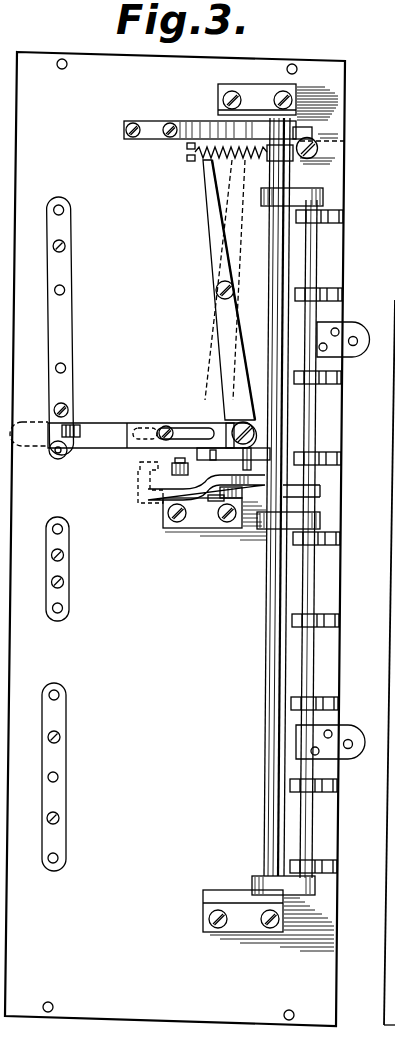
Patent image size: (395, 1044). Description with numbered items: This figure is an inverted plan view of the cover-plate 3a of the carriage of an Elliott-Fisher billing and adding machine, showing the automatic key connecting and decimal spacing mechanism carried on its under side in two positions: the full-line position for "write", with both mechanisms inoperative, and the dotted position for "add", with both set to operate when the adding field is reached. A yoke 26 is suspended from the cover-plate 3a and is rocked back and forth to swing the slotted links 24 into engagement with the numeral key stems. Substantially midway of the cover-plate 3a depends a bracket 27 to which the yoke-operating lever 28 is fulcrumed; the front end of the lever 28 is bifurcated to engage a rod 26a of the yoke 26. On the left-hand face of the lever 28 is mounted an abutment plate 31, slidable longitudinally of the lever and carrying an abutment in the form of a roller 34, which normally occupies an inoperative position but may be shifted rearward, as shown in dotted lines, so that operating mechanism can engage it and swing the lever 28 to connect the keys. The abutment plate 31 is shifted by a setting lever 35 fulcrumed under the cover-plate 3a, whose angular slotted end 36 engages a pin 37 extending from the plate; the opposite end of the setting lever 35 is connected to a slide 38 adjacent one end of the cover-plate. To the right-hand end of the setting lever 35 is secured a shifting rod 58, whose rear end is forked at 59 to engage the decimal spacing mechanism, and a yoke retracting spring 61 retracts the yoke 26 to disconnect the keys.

The cover-plate of the carriage 3a is at (200, 539).
The slotted links 24 is at (343, 217).
The yoke 26 is at (291, 248).
The rod of the yoke 26a is at (310, 404).
The bracket 27 is at (210, 500).
The yoke-operating lever 28 is at (322, 489).
The abutment plate 31 is at (202, 504).
The abutment (roller) 34 is at (139, 485).
The setting lever 35 is at (211, 210).
The angular slotted end 36 is at (230, 424).
The pin 37 is at (183, 416).
The slide 38 is at (302, 139).
The shifting rod 58 is at (118, 447).
The forked rear end of the shifting rod 59 is at (76, 430).
The yoke retracting spring 61 is at (202, 157).